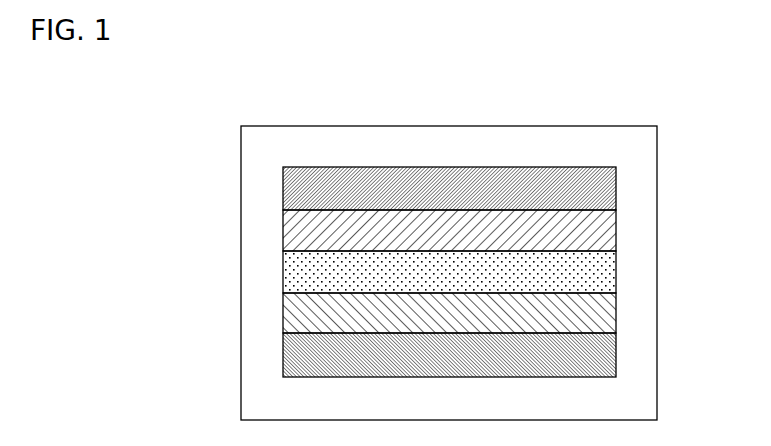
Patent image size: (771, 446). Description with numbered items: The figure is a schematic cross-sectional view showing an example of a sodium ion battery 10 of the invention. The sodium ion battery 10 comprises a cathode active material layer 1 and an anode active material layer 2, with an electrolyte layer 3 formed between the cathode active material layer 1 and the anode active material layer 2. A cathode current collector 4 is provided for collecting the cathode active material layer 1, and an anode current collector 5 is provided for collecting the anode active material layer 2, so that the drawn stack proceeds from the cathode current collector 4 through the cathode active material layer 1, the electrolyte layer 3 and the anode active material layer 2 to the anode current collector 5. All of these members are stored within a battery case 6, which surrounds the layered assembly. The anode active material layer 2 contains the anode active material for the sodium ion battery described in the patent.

The sodium ion battery 10 is at (487, 240).
The battery case 6 is at (630, 154).
The cathode current collector 4 is at (617, 190).
The cathode active material layer 1 is at (593, 237).
The electrolyte layer 3 is at (587, 280).
The anode active material layer 2 is at (592, 320).
The anode current collector 5 is at (615, 357).